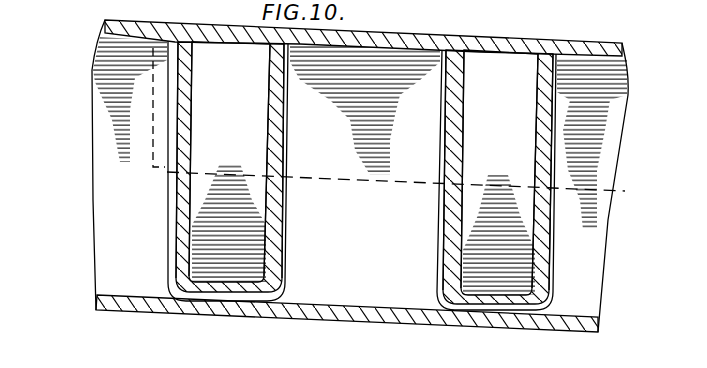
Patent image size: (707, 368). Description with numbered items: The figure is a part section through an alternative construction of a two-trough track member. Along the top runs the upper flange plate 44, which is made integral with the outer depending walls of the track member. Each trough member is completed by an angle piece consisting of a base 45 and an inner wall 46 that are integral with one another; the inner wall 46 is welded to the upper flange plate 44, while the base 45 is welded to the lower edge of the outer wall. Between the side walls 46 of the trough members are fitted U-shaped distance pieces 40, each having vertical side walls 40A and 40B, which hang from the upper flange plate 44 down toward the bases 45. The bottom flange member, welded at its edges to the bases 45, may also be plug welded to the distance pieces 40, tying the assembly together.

The U-shaped distance piece 40 is at (243, 290).
The vertical side wall 40A is at (190, 178).
The vertical side wall 40B is at (280, 208).
The upper flange plate 44 is at (375, 33).
The base 45 is at (352, 310).
The inner wall 46 is at (118, 103).